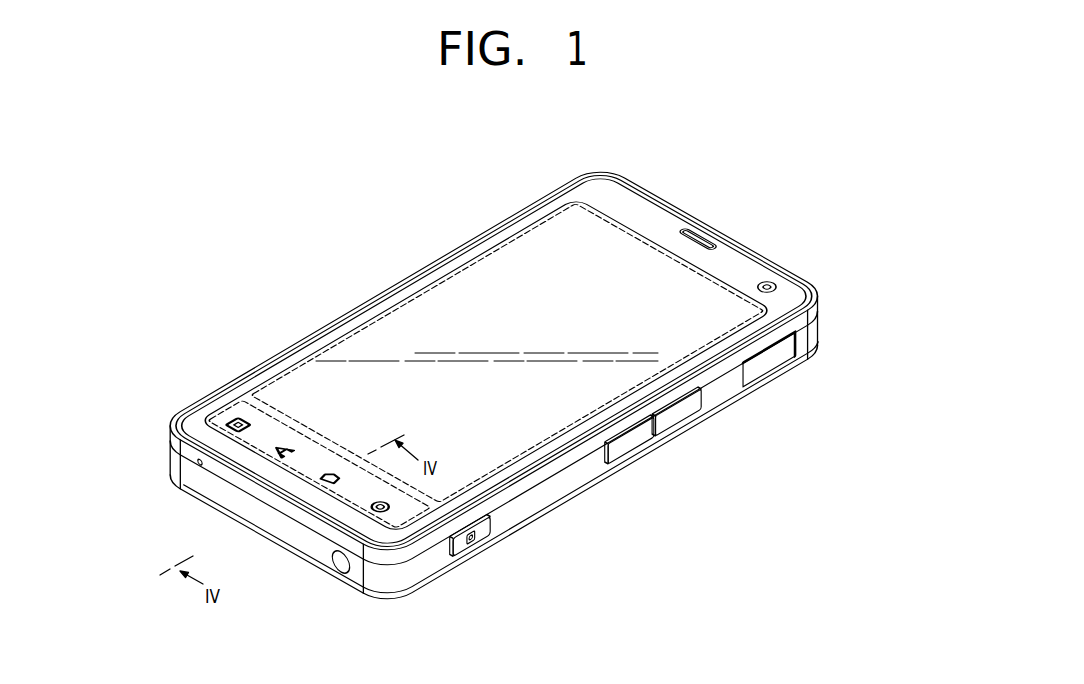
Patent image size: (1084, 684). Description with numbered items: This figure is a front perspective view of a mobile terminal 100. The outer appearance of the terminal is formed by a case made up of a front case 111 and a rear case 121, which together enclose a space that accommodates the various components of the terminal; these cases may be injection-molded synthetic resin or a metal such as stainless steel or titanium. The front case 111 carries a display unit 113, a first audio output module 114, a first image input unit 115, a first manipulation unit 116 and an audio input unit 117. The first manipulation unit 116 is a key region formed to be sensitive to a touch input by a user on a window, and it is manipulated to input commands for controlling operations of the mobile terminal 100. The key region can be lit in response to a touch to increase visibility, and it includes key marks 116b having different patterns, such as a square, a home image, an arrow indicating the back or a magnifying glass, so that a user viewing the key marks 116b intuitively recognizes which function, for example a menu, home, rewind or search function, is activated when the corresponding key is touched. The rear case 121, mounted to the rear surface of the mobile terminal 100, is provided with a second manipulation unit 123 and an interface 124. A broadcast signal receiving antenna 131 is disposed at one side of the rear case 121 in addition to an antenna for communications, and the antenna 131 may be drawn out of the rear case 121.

The mobile terminal 100 is at (452, 227).
The front case 111 is at (813, 313).
The display unit 113 is at (427, 293).
The first audio output module 114 is at (704, 239).
The first image input unit 115 is at (773, 284).
The first manipulation unit 116 is at (196, 421).
The key marks 116b is at (235, 419).
The audio input unit 117 is at (197, 465).
The rear case 121 is at (812, 336).
The second manipulation unit 123 is at (630, 443).
The interface 124 is at (778, 361).
The broadcast signal receiving antenna 131 is at (343, 563).